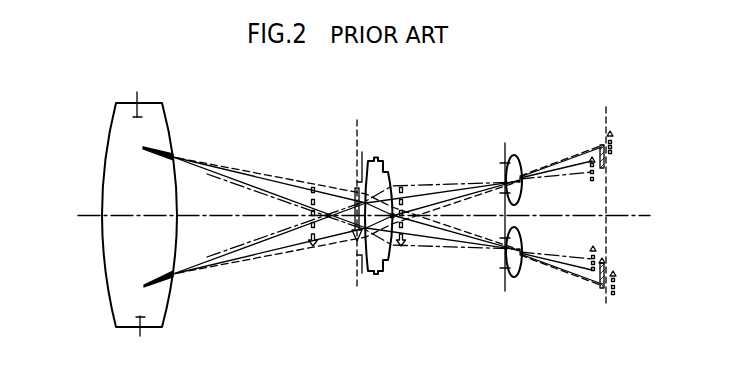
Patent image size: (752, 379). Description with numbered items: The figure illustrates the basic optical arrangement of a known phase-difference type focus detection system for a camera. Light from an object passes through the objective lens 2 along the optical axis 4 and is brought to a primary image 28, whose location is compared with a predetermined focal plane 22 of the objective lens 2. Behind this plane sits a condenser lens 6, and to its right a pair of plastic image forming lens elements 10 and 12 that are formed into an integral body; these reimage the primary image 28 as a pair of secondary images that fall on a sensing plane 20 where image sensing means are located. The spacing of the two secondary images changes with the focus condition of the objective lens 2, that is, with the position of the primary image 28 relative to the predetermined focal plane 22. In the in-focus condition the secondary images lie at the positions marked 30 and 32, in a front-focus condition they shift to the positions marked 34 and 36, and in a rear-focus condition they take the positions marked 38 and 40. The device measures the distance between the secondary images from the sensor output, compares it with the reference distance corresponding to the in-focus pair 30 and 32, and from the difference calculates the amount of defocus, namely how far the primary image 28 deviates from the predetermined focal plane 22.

The objective lens 2 is at (123, 120).
The optical axis 4 is at (90, 217).
The condenser lens 6 is at (373, 158).
The image forming lens element 10 is at (513, 155).
The image forming lens element 12 is at (516, 270).
The photosensor plane 20 is at (605, 303).
The predetermined focal plane 22 is at (338, 188).
The primary image 28 is at (402, 247).
The secondary image 30 is at (600, 144).
The secondary image 32 is at (606, 260).
The secondary image 34 is at (591, 181).
The secondary image 36 is at (590, 248).
The secondary image 38 is at (613, 133).
The secondary image 40 is at (616, 274).